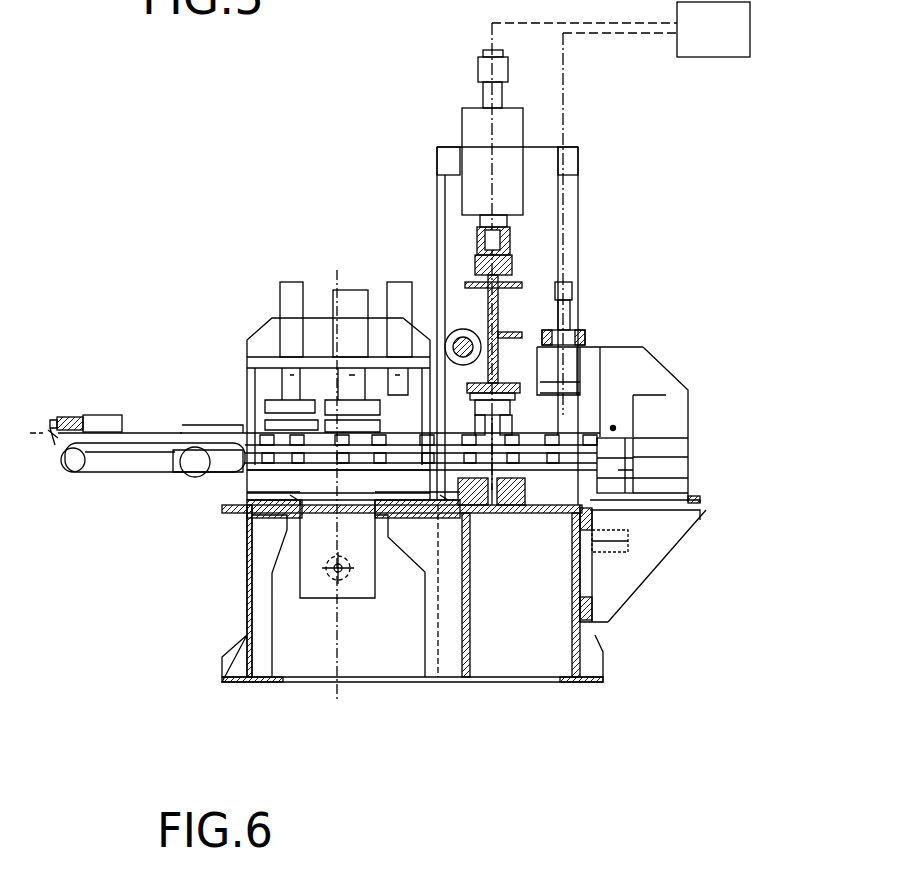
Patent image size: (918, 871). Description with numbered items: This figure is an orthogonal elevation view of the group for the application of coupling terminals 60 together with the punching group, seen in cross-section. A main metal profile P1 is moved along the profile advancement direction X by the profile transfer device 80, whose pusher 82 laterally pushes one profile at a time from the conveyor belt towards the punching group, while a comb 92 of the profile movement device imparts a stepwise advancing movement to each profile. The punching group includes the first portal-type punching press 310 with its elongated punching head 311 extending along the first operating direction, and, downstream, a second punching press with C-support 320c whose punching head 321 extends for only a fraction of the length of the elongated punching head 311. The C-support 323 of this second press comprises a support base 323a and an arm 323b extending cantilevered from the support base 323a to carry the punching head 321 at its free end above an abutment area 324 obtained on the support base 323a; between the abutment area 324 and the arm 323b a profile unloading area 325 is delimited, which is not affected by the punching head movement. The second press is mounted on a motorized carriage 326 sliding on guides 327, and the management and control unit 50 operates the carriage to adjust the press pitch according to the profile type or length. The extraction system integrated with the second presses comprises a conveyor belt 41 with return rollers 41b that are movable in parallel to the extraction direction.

The management and control unit 50 is at (713, 29).
The first portal-type punching press 310 is at (452, 122).
The elongated punching head 311 is at (487, 300).
The group for the application of coupling terminals 60 is at (293, 272).
The profile transfer device 80 is at (122, 500).
The pusher 82 is at (78, 403).
The comb 92 is at (218, 462).
The punching head 321 is at (577, 333).
The arm 323b is at (635, 382).
The second punching press with C-support 320c is at (693, 352).
The C-support 323 is at (658, 396).
The main metal profile P1 is at (606, 435).
The profile advancement direction X is at (610, 434).
The profile unloading area 325 is at (630, 433).
The support base 323a is at (640, 440).
The conveyor belt 41 is at (617, 473).
The return rollers 41b is at (706, 510).
The motorized carriage 326 is at (613, 590).
The abutment area 324 is at (575, 530).
The guides 327 is at (556, 473).